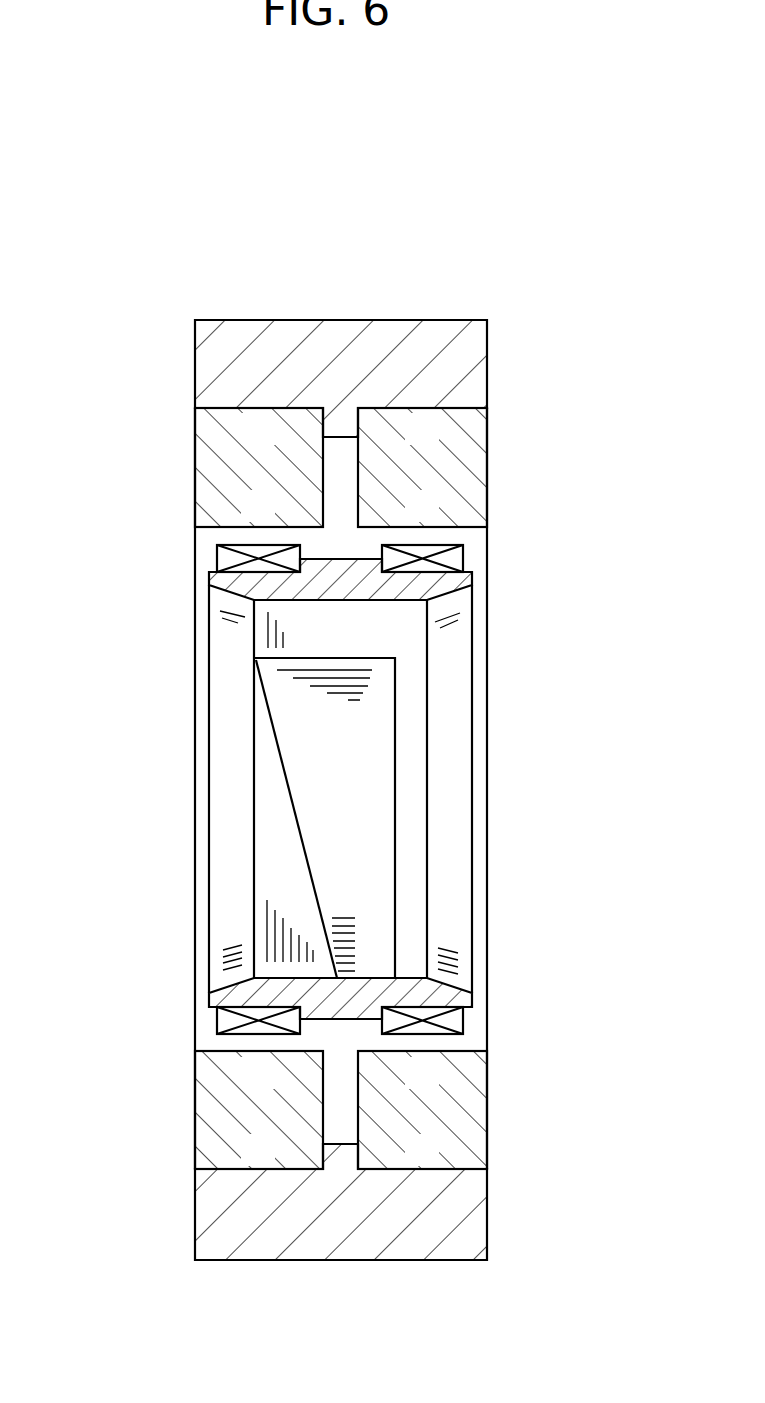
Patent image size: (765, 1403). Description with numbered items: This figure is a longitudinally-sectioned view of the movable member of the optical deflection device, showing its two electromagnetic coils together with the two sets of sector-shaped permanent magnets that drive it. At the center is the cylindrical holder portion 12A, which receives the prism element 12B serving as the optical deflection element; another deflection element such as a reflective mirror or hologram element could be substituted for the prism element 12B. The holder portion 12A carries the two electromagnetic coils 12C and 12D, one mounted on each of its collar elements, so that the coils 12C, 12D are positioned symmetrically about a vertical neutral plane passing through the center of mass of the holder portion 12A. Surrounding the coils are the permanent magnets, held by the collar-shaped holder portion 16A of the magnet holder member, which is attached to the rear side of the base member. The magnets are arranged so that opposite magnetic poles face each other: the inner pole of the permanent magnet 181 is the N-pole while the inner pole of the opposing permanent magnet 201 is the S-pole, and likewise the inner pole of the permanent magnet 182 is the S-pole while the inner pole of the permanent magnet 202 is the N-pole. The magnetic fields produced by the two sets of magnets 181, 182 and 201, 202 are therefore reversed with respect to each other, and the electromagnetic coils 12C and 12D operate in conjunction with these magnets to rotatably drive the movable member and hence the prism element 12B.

The collar-shaped holder portion 16A is at (347, 320).
The sector-shaped permanent magnet 181 is at (208, 463).
The sector-shaped permanent magnet 182 is at (208, 1122).
The sector-shaped permanent magnet 201 is at (472, 458).
The sector-shaped permanent magnet 202 is at (472, 1113).
The cylindrical holder portion 12A is at (447, 658).
The prism element 12B is at (375, 803).
The electromagnetic coil 12C is at (218, 565).
The electromagnetic coil 12D is at (450, 1022).